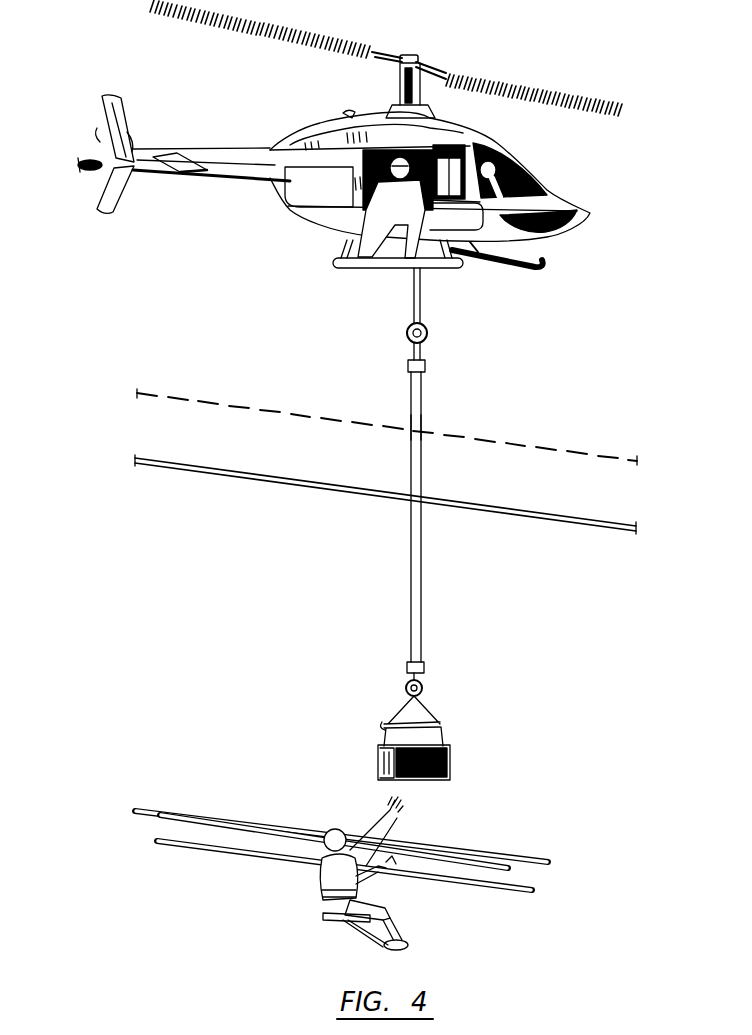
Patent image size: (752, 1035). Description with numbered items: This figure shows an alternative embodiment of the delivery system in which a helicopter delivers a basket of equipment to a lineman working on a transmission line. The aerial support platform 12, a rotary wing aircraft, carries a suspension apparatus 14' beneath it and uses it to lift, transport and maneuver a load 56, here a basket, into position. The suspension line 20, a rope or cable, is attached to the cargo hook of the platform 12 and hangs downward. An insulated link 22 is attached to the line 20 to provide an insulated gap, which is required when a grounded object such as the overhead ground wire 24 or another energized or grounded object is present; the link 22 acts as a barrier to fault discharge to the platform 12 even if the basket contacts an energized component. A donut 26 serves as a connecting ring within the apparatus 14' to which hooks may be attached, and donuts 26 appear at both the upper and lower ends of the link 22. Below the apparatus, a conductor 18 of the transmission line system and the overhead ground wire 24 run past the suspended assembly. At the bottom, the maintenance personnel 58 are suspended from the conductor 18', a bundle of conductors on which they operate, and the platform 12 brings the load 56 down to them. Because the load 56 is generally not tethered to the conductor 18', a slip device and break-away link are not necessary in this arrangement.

The aerial support platform 12 is at (550, 180).
The suspension line 20 is at (421, 305).
The donut 26 is at (429, 337).
The insulated link 22 is at (422, 480).
The suspension apparatus 14' is at (375, 406).
The overhead ground wire 24 is at (537, 452).
The conductor 18 is at (385, 494).
The load 56 is at (452, 757).
The conductor 18' is at (342, 850).
The maintenance personnel 58 is at (323, 882).